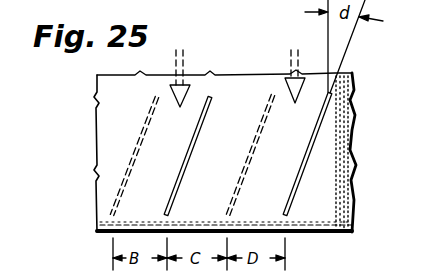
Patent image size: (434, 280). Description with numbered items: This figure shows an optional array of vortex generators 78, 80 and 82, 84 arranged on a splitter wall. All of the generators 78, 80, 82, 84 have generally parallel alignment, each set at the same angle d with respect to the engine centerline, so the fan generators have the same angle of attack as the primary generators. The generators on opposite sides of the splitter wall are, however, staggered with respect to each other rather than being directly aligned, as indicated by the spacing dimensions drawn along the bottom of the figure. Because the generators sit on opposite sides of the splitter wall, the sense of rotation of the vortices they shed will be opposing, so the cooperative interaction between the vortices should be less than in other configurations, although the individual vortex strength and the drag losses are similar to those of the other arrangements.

The generator 78 is at (298, 188).
The generator 80 is at (198, 143).
The generator 82 is at (250, 158).
The generator 84 is at (131, 160).